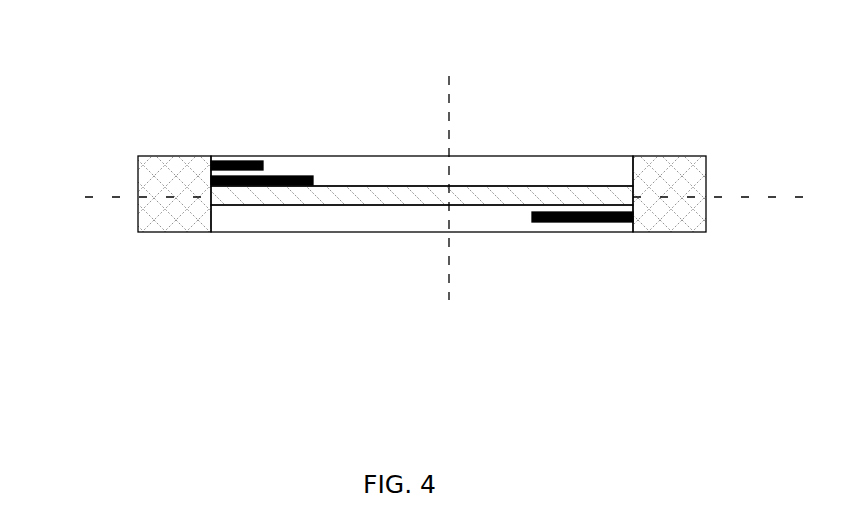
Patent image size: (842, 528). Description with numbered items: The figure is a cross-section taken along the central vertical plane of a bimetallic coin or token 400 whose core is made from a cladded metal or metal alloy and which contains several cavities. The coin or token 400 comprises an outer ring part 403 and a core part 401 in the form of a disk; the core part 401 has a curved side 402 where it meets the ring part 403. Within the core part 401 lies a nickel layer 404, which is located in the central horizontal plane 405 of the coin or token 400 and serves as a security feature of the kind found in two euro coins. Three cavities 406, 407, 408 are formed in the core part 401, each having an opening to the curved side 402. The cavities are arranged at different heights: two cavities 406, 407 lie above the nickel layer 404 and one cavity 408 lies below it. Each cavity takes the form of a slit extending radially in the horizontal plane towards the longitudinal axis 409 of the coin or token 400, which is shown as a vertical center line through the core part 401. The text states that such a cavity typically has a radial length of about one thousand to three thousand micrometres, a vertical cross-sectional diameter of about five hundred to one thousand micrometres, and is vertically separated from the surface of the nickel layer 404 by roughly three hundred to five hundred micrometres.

The bimetallic coin or token 400 is at (414, 164).
The core part 401 is at (470, 175).
The curved side 402 is at (212, 215).
The ring part 403 is at (677, 177).
The nickel layer 404 is at (450, 200).
The central horizontal plane 405 is at (412, 196).
The cavity 406 is at (243, 158).
The cavity 407 is at (333, 157).
The cavity 408 is at (595, 222).
The longitudinal axis 409 is at (449, 174).